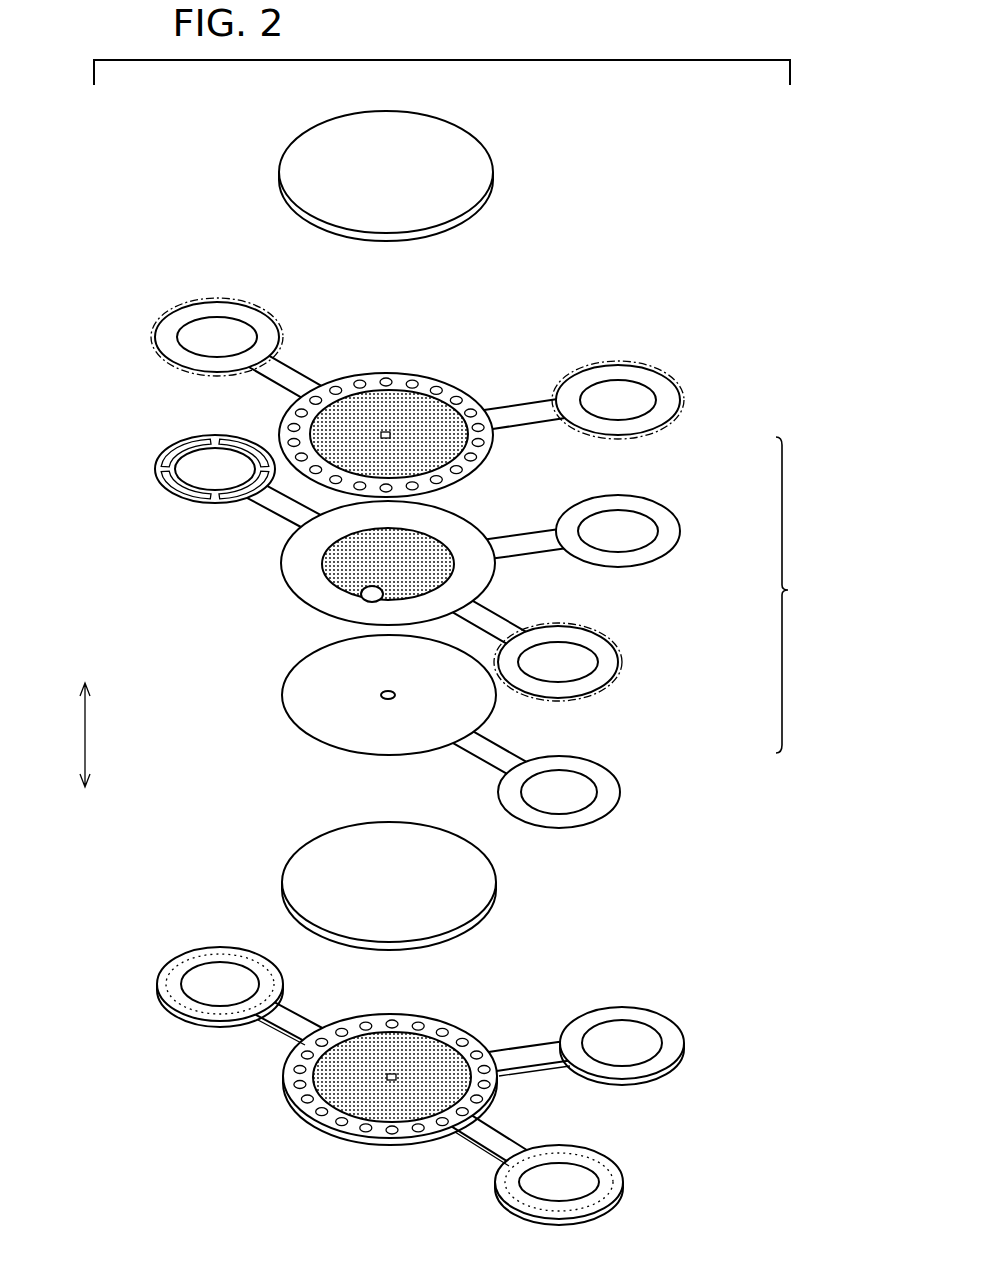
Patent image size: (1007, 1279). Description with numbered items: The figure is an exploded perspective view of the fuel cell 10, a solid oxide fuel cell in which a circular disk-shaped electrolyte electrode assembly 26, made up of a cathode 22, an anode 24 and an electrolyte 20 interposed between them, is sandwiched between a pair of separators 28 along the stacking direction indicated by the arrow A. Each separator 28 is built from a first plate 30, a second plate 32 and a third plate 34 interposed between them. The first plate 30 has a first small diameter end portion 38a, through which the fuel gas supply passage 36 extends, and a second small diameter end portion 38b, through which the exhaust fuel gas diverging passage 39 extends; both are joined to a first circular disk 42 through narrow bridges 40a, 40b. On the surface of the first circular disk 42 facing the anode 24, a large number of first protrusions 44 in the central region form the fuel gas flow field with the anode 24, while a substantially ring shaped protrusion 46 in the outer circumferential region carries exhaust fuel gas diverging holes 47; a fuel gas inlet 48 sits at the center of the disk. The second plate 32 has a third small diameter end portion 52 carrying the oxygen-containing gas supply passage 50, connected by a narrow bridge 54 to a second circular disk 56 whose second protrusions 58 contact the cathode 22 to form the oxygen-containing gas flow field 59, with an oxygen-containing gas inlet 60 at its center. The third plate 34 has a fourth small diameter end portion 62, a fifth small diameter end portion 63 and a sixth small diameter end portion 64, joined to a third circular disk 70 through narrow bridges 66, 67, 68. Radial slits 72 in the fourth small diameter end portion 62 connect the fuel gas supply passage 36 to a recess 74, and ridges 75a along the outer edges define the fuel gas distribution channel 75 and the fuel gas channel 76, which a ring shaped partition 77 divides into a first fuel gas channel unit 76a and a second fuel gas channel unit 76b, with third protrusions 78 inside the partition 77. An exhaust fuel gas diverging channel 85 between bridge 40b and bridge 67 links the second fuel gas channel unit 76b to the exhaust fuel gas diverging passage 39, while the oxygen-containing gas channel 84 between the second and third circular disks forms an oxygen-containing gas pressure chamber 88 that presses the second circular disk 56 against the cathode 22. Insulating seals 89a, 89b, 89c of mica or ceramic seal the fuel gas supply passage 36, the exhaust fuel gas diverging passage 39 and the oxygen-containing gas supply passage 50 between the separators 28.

The fuel cell 10 is at (106, 139).
The stacking direction A is at (73, 735).
The electrolyte 20 is at (283, 176).
The cathode 22 is at (294, 158).
The anode 24 is at (300, 192).
The electrolyte electrode assembly 26 is at (484, 139).
The separator 28 is at (804, 595).
The first plate 30 is at (505, 438).
The second plate 32 is at (510, 700).
The third plate 34 is at (505, 564).
The fuel gas supply passage 36 is at (222, 330).
The first small diameter end portion 38a is at (158, 345).
The second small diameter end portion 38b is at (681, 401).
The exhaust fuel gas diverging passage 39 is at (626, 390).
The narrow bridge 40a is at (289, 376).
The narrow bridge 40b is at (528, 406).
The first circular disk 42 is at (481, 390).
The first protrusions 44 is at (394, 410).
The substantially ring shaped protrusion 46 is at (494, 445).
The exhaust fuel gas diverging holes 47 is at (472, 396).
The fuel gas inlet 48 is at (384, 431).
The oxygen-containing gas supply passage 50 is at (570, 643).
The third small diameter end portion 52 is at (619, 790).
The narrow bridge 54 is at (480, 762).
The second circular disk 56 is at (283, 706).
The second protrusions 58 is at (324, 736).
The oxygen-containing gas flow field 59 is at (325, 735).
The oxygen-containing gas inlet 60 is at (380, 695).
The fourth small diameter end portion 62 is at (160, 491).
The fifth small diameter end portion 63 is at (662, 553).
The sixth small diameter end portion 64 is at (624, 678).
The narrow bridge 66 is at (262, 509).
The narrow bridge 67 is at (508, 538).
The narrow bridge 68 is at (500, 622).
The third circular disk 70 is at (418, 634).
The slits 72 is at (216, 440).
The recess 74 is at (169, 446).
The fuel gas distribution channel 75 is at (280, 504).
The ridges 75a is at (330, 617).
The fuel gas channel 76 is at (216, 571).
The first fuel gas channel unit 76a is at (330, 565).
The second fuel gas channel unit 76b is at (318, 596).
The partition 77 is at (374, 604).
The third protrusions 78 is at (444, 549).
The oxygen-containing gas channel 84 is at (380, 736).
The exhaust fuel gas diverging channel 85 is at (538, 548).
The oxygen-containing gas pressure chamber 88 is at (380, 745).
The insulating seal 89a is at (259, 300).
The insulating seal 89b is at (624, 360).
The insulating seal 89c is at (614, 630).